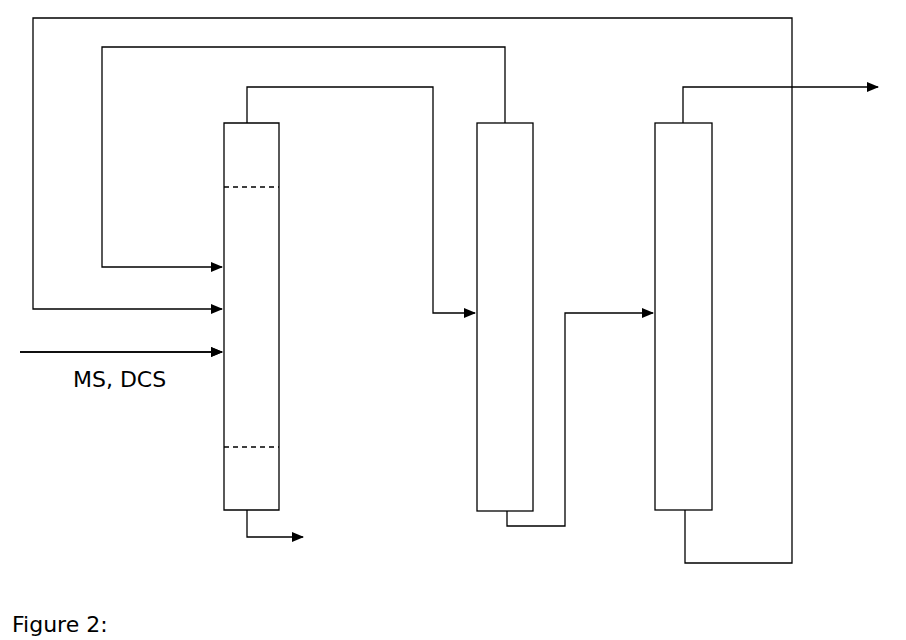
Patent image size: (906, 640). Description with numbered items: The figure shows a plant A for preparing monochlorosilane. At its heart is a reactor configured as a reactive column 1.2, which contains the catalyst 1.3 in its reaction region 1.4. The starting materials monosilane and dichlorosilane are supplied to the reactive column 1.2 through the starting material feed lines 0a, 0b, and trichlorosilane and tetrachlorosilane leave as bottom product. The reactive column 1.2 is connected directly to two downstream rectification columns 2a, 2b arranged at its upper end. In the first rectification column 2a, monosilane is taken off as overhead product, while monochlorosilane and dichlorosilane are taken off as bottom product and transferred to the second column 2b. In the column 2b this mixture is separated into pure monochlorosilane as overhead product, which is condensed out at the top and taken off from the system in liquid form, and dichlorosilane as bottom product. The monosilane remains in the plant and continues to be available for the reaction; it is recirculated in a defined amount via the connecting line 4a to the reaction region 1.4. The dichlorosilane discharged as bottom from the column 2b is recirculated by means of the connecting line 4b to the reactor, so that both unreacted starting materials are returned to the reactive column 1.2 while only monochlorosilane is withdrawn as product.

The plant A is at (362, 347).
The reaction region 1.4 is at (279, 249).
The catalyst 1.3 is at (258, 384).
The reactive column 1.2 is at (279, 464).
The starting material feed line 0a is at (121, 337).
The starting material feed line 0b is at (121, 337).
The rectification column 2a is at (477, 408).
The rectification column 2b is at (655, 406).
The connecting line 4a is at (102, 62).
The connecting line 4b is at (610, 18).